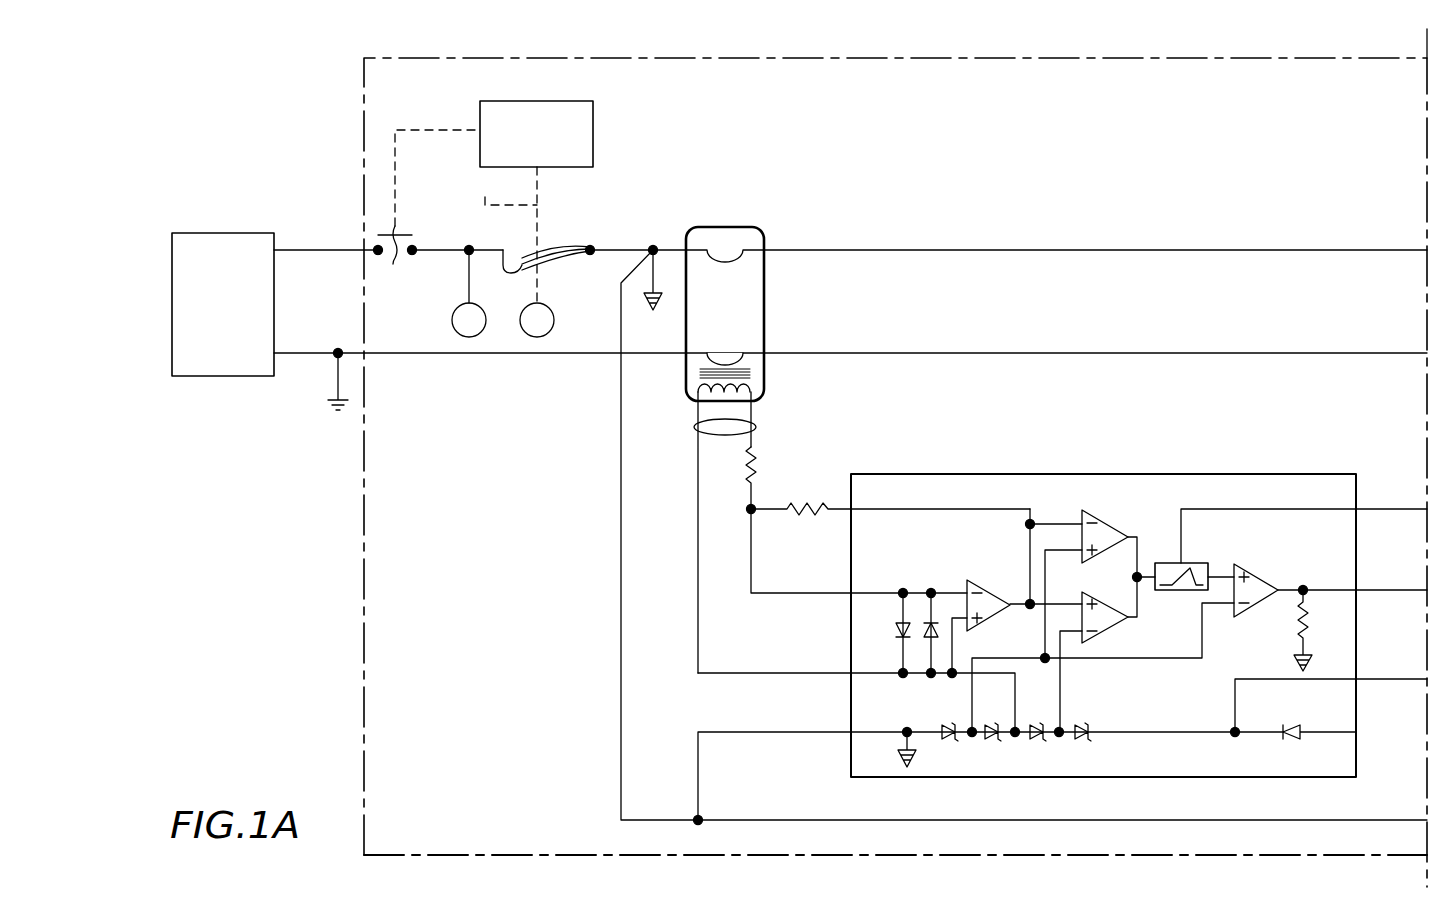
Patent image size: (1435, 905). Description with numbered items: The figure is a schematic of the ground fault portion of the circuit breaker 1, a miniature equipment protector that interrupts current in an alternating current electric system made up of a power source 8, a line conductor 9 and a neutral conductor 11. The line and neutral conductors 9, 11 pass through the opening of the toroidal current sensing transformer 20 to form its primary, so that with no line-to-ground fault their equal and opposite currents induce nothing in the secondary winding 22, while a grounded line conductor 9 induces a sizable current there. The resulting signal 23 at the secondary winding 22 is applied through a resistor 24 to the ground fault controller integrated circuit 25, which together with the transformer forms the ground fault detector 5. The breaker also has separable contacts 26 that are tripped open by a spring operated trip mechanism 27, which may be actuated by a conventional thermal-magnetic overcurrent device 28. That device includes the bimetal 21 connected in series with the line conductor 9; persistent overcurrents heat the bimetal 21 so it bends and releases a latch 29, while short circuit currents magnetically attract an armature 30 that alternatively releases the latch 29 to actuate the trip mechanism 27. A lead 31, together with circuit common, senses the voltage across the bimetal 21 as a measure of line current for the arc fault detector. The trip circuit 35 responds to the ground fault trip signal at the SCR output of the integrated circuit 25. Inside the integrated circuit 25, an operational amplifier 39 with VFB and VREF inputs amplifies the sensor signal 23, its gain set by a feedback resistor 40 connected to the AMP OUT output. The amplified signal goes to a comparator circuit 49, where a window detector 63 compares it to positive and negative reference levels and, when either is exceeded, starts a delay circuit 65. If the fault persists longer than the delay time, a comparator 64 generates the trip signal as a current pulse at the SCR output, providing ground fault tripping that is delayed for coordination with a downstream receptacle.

The circuit breaker 1 is at (363, 711).
The ground fault detector 5 is at (1050, 466).
The power source 8 is at (192, 233).
The line conductor 9 is at (296, 250).
The neutral conductor 11 is at (298, 353).
The current sensing transformer 20 is at (766, 298).
The bimetal 21 is at (570, 247).
The secondary winding 22 is at (752, 378).
The signal 23 is at (695, 428).
The resistor 24 is at (757, 465).
The ground fault controller integrated circuit 25 is at (1018, 778).
The separable contacts 26 is at (427, 213).
The trip mechanism 27 is at (531, 102).
The thermal-magnetic overcurrent device 28 is at (602, 232).
The latch 29 is at (485, 205).
The armature 30 is at (524, 258).
The lead 31 is at (469, 284).
The trip circuit 35 is at (440, 82).
The operational amplifier 39 is at (970, 586).
The feedback resistor 40 is at (806, 515).
The comparator circuit 49 is at (1112, 638).
The window detector 63 is at (1114, 519).
The comparator 64 is at (1247, 590).
The delay circuit 65 is at (1192, 591).